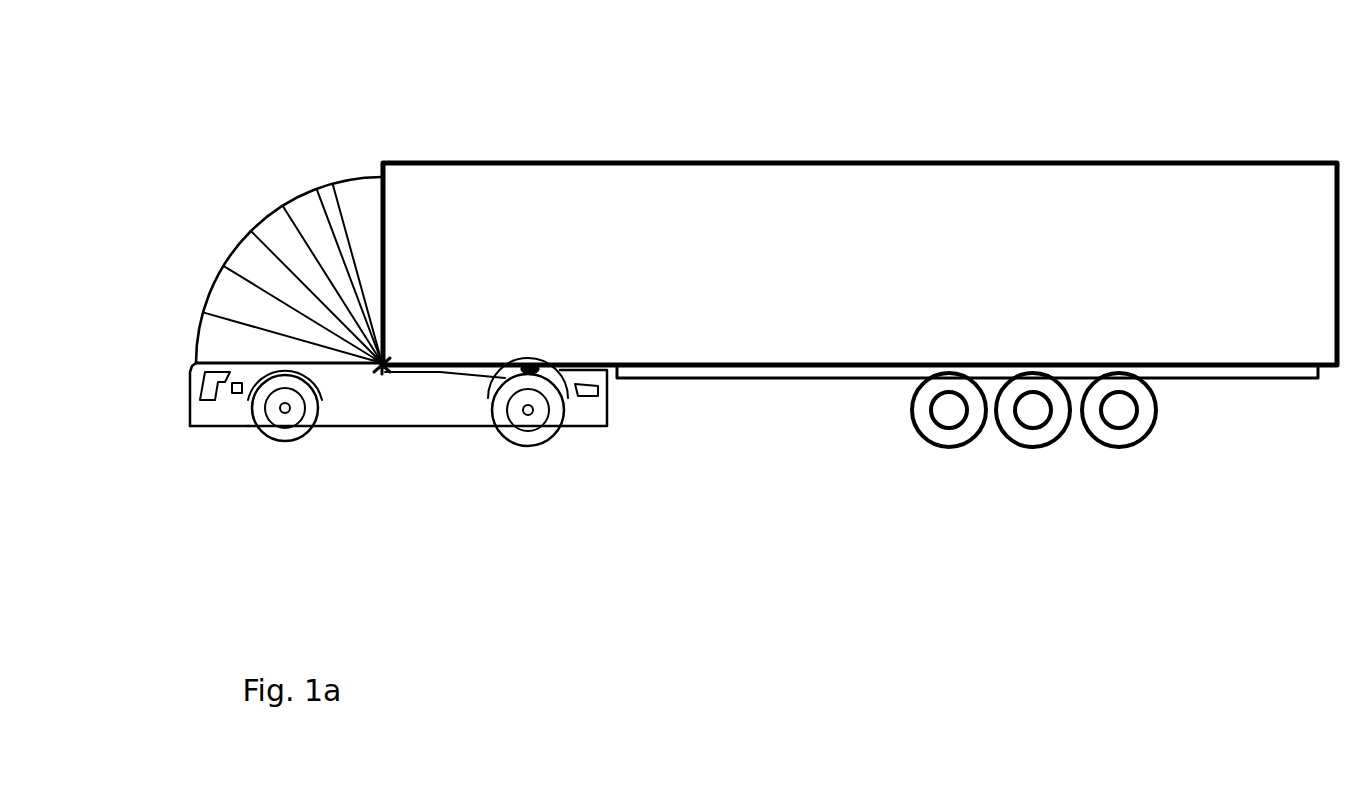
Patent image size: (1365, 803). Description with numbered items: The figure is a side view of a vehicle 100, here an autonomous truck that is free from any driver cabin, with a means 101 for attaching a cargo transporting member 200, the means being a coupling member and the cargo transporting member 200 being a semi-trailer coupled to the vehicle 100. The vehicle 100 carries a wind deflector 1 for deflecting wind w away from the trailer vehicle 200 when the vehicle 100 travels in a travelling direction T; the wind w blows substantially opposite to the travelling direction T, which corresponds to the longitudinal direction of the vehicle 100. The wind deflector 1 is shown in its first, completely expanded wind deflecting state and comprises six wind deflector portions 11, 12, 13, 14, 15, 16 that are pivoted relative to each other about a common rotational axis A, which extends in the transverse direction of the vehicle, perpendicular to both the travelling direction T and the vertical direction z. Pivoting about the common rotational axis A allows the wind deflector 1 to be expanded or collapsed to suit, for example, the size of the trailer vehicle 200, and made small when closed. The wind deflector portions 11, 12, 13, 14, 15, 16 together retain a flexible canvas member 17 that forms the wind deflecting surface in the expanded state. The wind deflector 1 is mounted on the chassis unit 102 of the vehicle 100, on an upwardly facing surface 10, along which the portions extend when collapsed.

The wind deflector 1 is at (212, 135).
The upwardly facing surface 10 is at (283, 345).
The wind deflector portion 11 is at (211, 345).
The wind deflector portion 12 is at (226, 298).
The wind deflector portion 13 is at (256, 250).
The wind deflector portion 14 is at (292, 217).
The wind deflector portion 15 is at (315, 192).
The wind deflector portion 16 is at (372, 182).
The canvas member 17 is at (303, 203).
The vehicle 100 is at (379, 470).
The means for attaching a cargo transporting member 101 is at (517, 332).
The chassis unit 102 is at (425, 412).
The cargo transporting member 200 is at (756, 479).
The common rotational axis A is at (381, 367).
The travelling direction T is at (918, 108).
The wind w is at (118, 222).
The vertical direction z is at (52, 352).